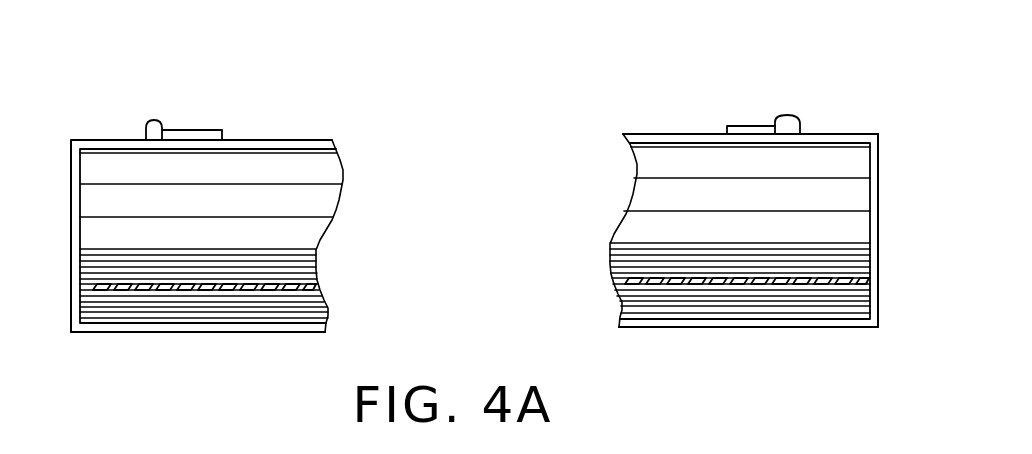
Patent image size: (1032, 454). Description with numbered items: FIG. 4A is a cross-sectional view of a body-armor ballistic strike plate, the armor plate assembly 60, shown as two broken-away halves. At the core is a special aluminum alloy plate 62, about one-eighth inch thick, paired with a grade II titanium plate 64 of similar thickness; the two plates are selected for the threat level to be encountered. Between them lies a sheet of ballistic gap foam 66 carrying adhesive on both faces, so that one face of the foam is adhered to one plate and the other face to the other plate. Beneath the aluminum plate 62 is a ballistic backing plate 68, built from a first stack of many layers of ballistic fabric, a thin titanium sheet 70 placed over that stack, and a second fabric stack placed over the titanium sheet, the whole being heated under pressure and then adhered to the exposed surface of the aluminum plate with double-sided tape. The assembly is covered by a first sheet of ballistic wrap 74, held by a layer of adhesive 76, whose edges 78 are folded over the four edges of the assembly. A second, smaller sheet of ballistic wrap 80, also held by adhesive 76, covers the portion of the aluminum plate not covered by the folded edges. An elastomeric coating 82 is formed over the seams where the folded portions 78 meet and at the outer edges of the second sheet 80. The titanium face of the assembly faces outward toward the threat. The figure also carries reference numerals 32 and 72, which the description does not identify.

The sensor element 32 is at (622, 218).
The armor plate assembly 60 is at (801, 60).
The aluminum alloy plate 62 is at (282, 244).
The titanium plate 64 is at (282, 178).
The ballistic gap foam 66 is at (282, 211).
The ballistic backing plate 68 is at (400, 248).
The titanium sheet 70 is at (318, 285).
The interface layer 72 is at (316, 257).
The first sheet of ballistic wrap 74 is at (207, 333).
The layer of adhesive 76 is at (333, 142).
The edges of the first sheet of ballistic wrap 78 is at (122, 139).
The second sheet of ballistic wrap 80 is at (250, 132).
The coating 82 is at (157, 120).